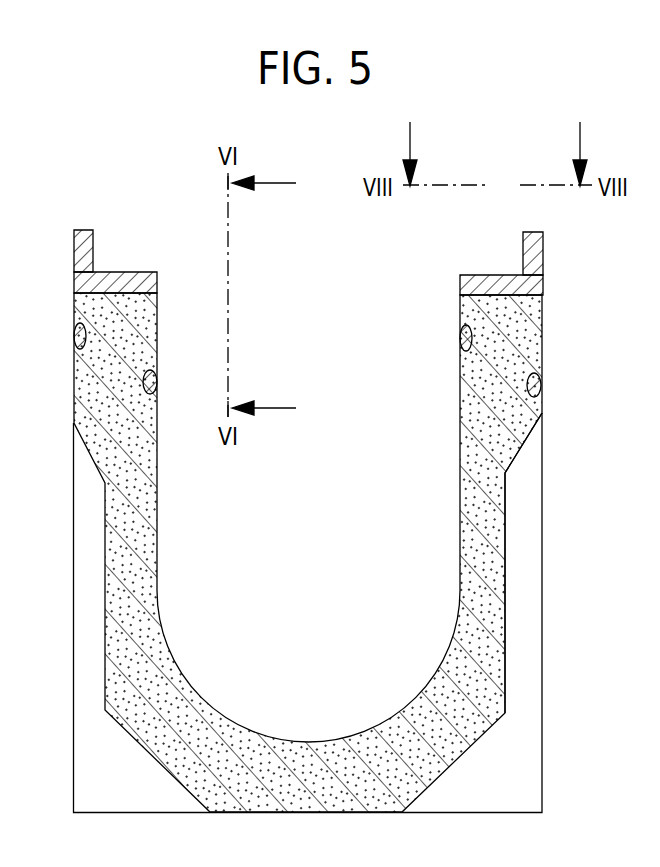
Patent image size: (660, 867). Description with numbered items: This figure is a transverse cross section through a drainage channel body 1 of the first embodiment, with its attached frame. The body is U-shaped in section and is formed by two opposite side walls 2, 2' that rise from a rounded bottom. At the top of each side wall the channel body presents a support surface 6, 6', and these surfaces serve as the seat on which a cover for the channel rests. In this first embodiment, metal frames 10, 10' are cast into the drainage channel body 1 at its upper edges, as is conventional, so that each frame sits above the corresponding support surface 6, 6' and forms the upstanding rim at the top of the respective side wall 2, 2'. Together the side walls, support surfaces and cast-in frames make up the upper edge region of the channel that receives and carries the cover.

The drainage channel body 1 is at (552, 566).
The side wall 2 is at (294, 552).
The side wall 2' is at (522, 519).
The support surface 6 is at (122, 261).
The support surface 6' is at (499, 261).
The metal frame 10 is at (114, 236).
The metal frame 10' is at (505, 234).